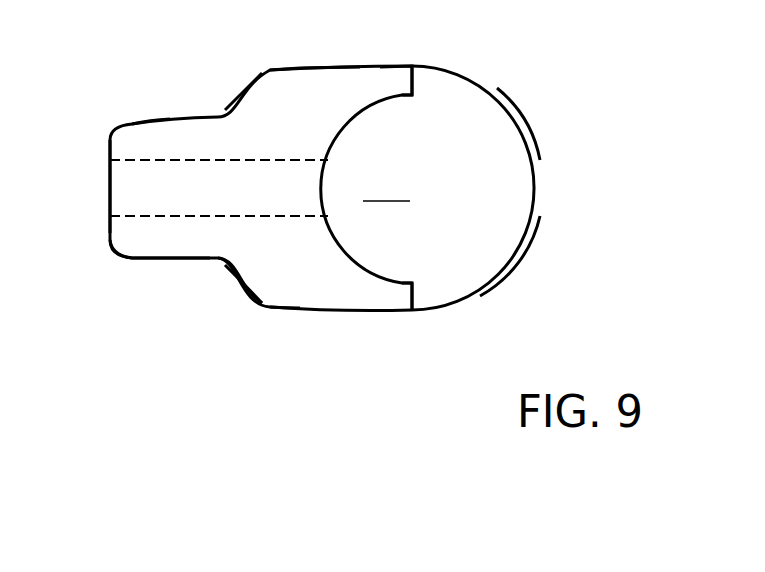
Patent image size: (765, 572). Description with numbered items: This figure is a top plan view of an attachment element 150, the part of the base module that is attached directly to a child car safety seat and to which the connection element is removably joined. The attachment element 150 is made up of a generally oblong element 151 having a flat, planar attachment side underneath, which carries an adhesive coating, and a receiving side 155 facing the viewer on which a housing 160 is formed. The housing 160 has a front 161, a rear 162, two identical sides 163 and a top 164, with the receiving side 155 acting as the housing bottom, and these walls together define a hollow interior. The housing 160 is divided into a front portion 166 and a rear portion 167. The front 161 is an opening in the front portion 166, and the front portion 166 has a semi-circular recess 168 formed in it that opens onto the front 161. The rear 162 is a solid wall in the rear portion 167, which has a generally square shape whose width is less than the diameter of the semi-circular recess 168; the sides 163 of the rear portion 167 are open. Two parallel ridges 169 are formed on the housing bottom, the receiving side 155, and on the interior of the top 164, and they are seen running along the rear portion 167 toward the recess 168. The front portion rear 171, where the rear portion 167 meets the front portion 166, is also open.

The attachment element 150 is at (497, 86).
The generally oblong element 151 is at (507, 283).
The receiving side 155 is at (522, 161).
The housing 160 is at (325, 78).
The front 161 is at (418, 288).
The rear 162 is at (108, 175).
The sides 163 is at (285, 67).
The top 164 is at (262, 273).
The front portion 166 is at (390, 75).
The rear portion 167 is at (160, 243).
The semi-circular recess 168 is at (386, 189).
The parallel ridges 169 is at (267, 157).
The front portion rear 171 is at (252, 78).